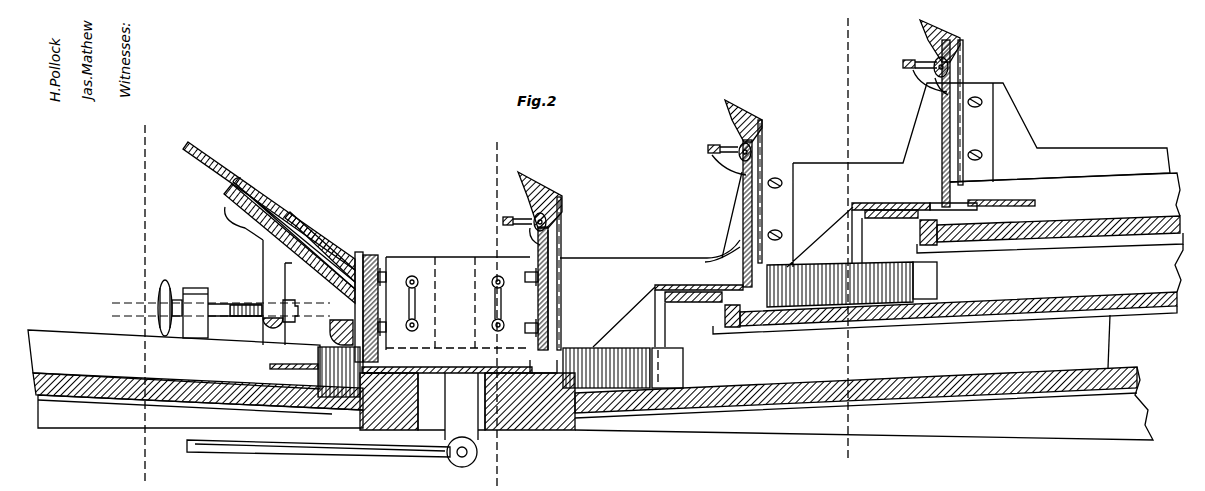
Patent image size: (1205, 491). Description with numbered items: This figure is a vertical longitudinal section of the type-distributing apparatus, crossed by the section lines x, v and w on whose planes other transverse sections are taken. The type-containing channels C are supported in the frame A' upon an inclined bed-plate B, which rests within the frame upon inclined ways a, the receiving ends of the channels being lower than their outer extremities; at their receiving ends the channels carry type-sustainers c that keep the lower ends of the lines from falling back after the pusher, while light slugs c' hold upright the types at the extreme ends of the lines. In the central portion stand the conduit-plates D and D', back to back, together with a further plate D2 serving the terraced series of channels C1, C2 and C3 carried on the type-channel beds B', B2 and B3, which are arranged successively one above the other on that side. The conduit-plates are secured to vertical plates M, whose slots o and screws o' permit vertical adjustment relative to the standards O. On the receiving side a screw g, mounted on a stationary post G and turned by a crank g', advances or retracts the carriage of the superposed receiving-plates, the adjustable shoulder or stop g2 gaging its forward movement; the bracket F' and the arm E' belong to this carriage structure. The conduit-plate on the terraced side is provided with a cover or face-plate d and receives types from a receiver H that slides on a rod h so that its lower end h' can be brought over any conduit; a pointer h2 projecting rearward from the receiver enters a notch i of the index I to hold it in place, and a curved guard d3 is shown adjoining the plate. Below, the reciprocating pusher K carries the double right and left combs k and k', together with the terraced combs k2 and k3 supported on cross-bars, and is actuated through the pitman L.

The section line x x is at (144, 300).
The section line v v is at (494, 308).
The section line w w is at (847, 238).
The frame A' is at (604, 261).
The inclined bed-plate B is at (198, 409).
The type-channel bed B' is at (865, 389).
The type-channel bed B2 is at (1140, 322).
The type-channel bed B3 is at (1183, 235).
The inclined way a is at (613, 328).
The type-containing channel C is at (174, 359).
The type-containing channel C1 is at (1071, 341).
The type-containing channel C2 is at (1118, 268).
The type-containing channel C3 is at (1065, 194).
The type-sustainer c is at (652, 293).
The slug c' is at (794, 325).
The conduit-plate D is at (370, 299).
The conduit-plate D' is at (569, 273).
The conduit-plate D2 is at (880, 161).
The cover or face-plate d is at (761, 239).
The curved guard d3 is at (722, 251).
The inclined arm E' is at (269, 243).
The bracket F' is at (258, 276).
The stationary post or standard G is at (195, 313).
The screw g is at (221, 301).
The crank g' is at (163, 308).
The adjustable shoulder or stop g2 is at (287, 314).
The receiver H is at (746, 153).
The rod h is at (761, 140).
The lower end of receiver h' is at (756, 160).
The finger or pointer h2 is at (826, 147).
The index I is at (648, 242).
The notch or recess i is at (791, 267).
The reciprocating pusher or type-forwarder K is at (451, 389).
The comb k is at (459, 359).
The comb k' is at (519, 280).
The comb k2 is at (699, 285).
The comb k3 is at (935, 205).
The pitman L is at (332, 424).
The vertical plate M is at (382, 260).
The standard O is at (458, 302).
The slot o is at (459, 303).
The screw o' is at (455, 302).